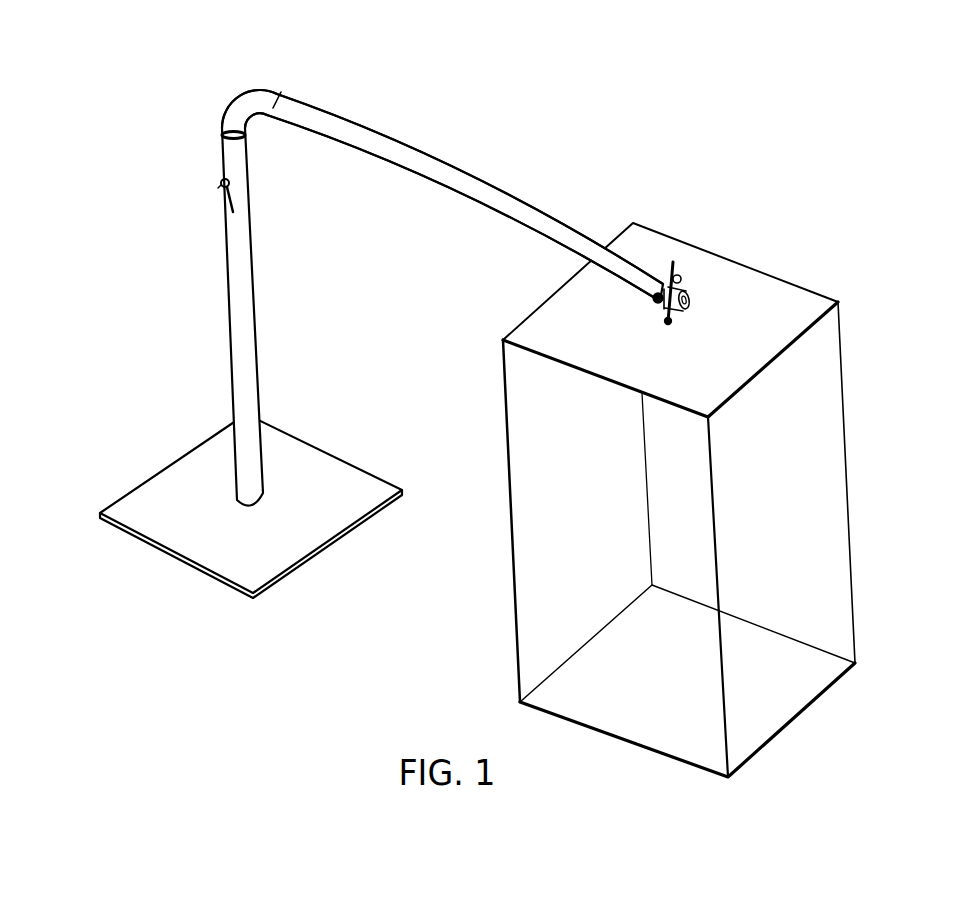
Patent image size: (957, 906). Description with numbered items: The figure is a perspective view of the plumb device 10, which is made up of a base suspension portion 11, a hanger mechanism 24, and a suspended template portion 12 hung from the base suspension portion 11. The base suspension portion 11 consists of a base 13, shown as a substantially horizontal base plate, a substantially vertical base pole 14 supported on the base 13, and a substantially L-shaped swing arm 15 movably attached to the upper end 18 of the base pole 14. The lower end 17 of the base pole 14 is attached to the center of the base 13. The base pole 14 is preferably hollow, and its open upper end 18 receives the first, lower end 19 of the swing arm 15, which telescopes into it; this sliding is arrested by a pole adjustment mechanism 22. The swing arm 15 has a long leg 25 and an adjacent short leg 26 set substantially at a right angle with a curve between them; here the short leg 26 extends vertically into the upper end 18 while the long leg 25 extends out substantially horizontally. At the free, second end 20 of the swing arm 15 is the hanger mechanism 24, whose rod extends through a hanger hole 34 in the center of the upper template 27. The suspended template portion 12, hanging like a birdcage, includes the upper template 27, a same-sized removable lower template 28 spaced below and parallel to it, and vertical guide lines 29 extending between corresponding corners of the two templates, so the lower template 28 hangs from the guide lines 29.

The plumb device 10 is at (756, 121).
The base suspension portion 11 is at (152, 280).
The suspended template portion 12 is at (847, 226).
The base 13 is at (302, 542).
The base pole 14 is at (247, 337).
The swing arm 15 is at (412, 121).
The lower end of the base pole 17 is at (237, 500).
The upper end of the base pole 18 is at (222, 135).
The first, lower end of the swing arm 19 is at (253, 357).
The second end of the swing arm 20 is at (690, 292).
The pole adjustment mechanism 22 is at (218, 188).
The hanger mechanism 24 is at (679, 254).
The long leg 25 is at (330, 110).
The short leg 26 is at (224, 120).
The upper template 27 is at (681, 364).
The lower template 28 is at (672, 697).
The guide lines 29 is at (508, 448).
The hanger hole 34 is at (671, 320).